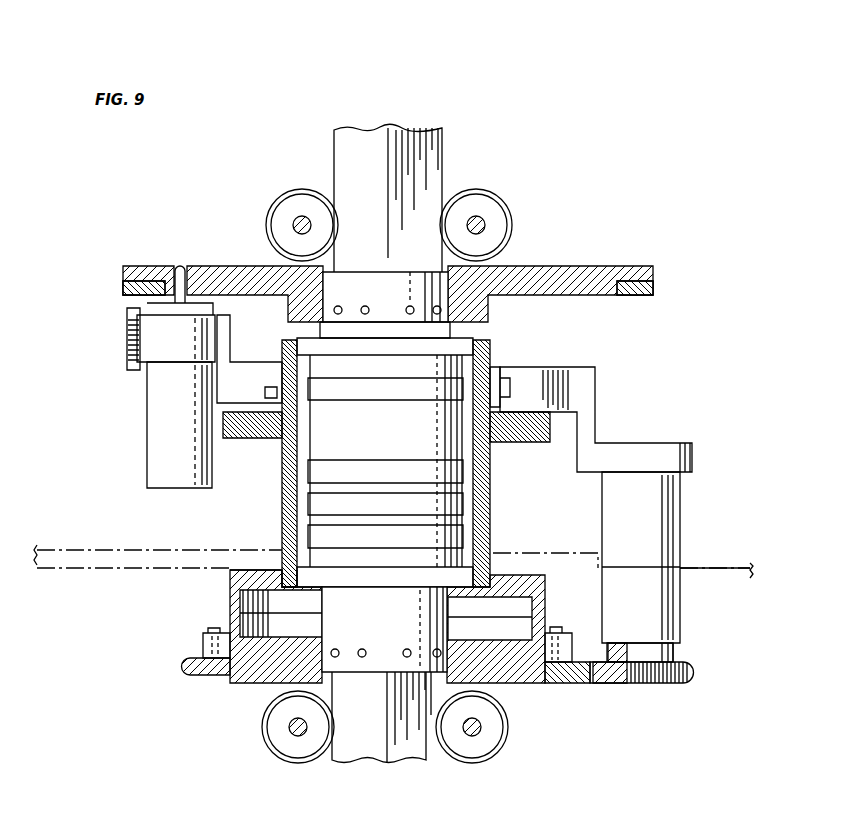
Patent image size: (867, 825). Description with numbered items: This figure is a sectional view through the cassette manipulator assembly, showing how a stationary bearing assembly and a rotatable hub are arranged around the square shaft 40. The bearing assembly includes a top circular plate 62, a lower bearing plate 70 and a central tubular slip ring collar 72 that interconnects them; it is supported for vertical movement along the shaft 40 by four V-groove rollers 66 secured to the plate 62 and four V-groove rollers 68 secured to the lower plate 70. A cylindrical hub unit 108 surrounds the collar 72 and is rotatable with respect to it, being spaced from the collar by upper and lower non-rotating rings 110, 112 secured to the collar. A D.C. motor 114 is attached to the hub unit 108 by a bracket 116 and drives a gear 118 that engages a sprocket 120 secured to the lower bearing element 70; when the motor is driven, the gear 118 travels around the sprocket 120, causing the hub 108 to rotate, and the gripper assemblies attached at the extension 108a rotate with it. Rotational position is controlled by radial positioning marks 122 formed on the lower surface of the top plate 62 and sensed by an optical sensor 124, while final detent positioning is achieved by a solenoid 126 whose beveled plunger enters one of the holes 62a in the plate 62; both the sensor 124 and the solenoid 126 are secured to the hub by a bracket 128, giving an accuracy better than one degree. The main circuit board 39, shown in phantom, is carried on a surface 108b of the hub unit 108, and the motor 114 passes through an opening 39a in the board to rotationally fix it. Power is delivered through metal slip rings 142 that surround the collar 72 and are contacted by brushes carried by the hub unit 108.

The main circuit board 39 is at (89, 550).
The opening in the circuit board 39a is at (683, 557).
The square shaft 40 is at (445, 143).
The top circular plate 62 is at (407, 287).
The holes in the top plate 62a is at (179, 266).
The V-groove rollers 66 is at (217, 191).
The V-groove rollers 68 is at (263, 725).
The lower bearing plate 70 is at (530, 687).
The slip ring collar 72 is at (352, 673).
The hub unit 108 is at (230, 597).
The extension of the hub unit 108a is at (513, 443).
The surface of the hub unit 108b is at (247, 570).
The upper non-rotating ring 110 is at (475, 336).
The lower non-rotating ring 112 is at (478, 540).
The motor 114 is at (680, 625).
The bracket 116 is at (595, 398).
The gear 118 is at (693, 673).
The sprocket 120 is at (193, 677).
The radial positioning marks 122 is at (637, 300).
The optical sensor 124 is at (137, 327).
The solenoid 126 is at (147, 407).
The bracket 128 is at (250, 362).
The slip rings 142 is at (337, 395).